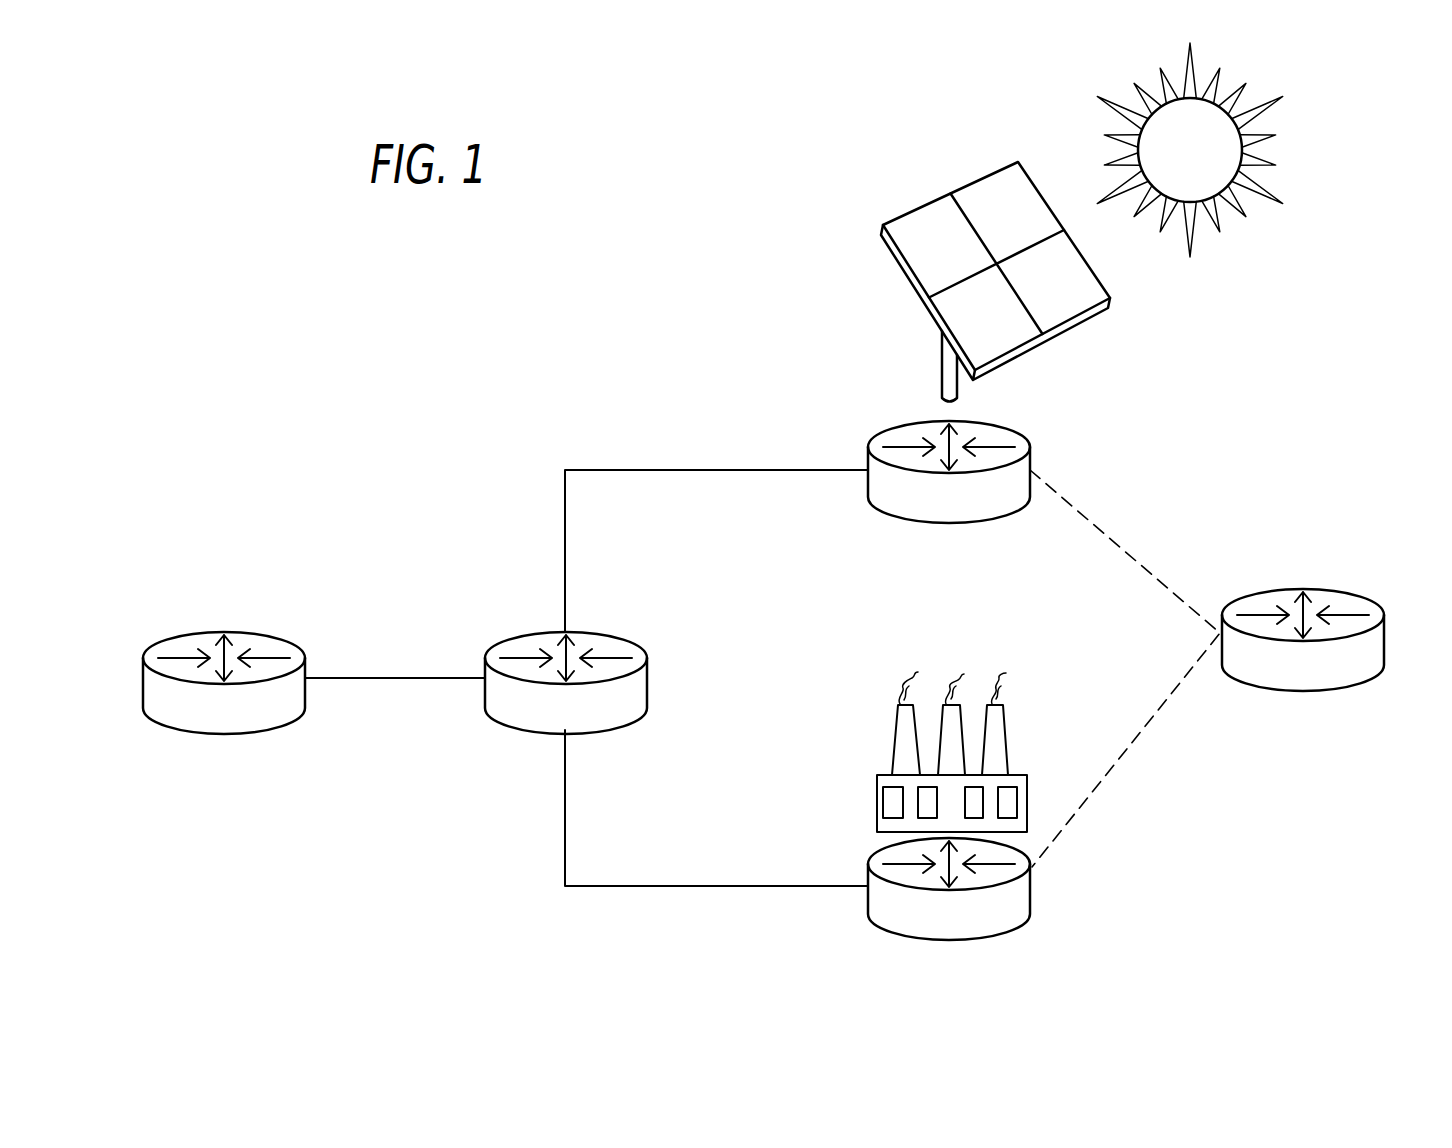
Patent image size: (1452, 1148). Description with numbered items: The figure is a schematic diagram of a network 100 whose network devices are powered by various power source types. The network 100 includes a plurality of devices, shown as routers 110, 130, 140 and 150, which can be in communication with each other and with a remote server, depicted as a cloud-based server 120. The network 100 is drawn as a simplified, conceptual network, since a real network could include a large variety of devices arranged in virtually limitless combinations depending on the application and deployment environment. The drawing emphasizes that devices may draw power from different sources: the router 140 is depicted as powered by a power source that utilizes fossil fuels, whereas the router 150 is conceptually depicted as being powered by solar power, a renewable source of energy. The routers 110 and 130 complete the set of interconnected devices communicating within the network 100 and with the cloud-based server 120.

The network 100 is at (400, 394).
The router 110 is at (215, 632).
The router 130 is at (502, 640).
The router 150 is at (895, 425).
The router 140 is at (888, 925).
The cloud-based server 120 is at (1340, 590).